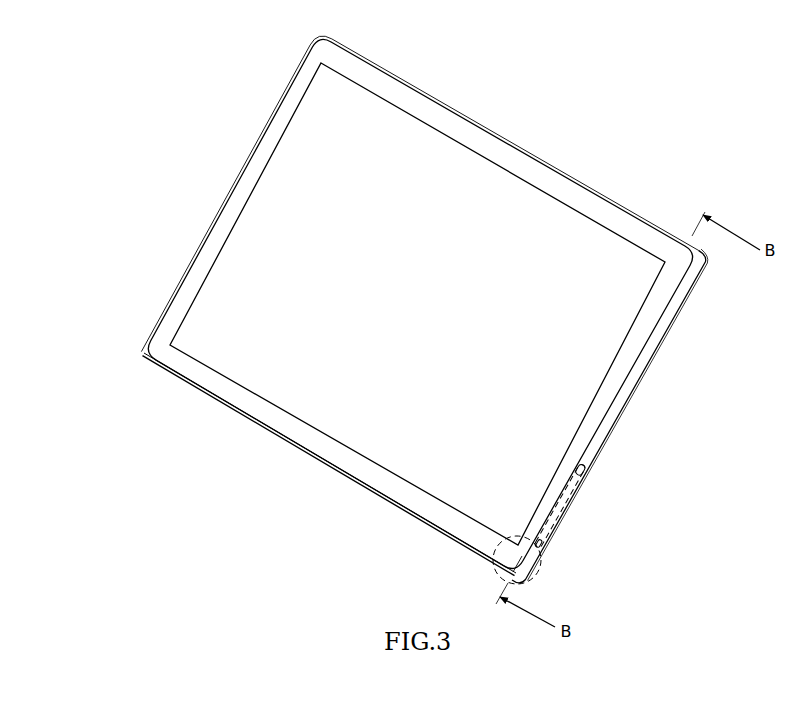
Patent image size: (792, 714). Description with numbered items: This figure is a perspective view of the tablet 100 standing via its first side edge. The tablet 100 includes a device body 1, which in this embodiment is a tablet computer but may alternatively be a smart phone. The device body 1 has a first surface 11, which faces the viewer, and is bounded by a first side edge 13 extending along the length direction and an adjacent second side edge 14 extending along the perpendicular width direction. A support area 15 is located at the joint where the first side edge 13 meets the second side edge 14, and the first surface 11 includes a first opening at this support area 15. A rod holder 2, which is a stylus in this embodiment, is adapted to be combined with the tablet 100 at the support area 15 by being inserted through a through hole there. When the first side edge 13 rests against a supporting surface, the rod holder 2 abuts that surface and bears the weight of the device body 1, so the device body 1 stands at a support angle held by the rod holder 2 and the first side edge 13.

The tablet 100 is at (121, 112).
The device body 1 is at (211, 201).
The first surface 11 is at (548, 171).
The first side edge 13 is at (273, 458).
The second side edge 14 is at (640, 399).
The support area 15 is at (497, 571).
The rod holder 2 is at (541, 566).